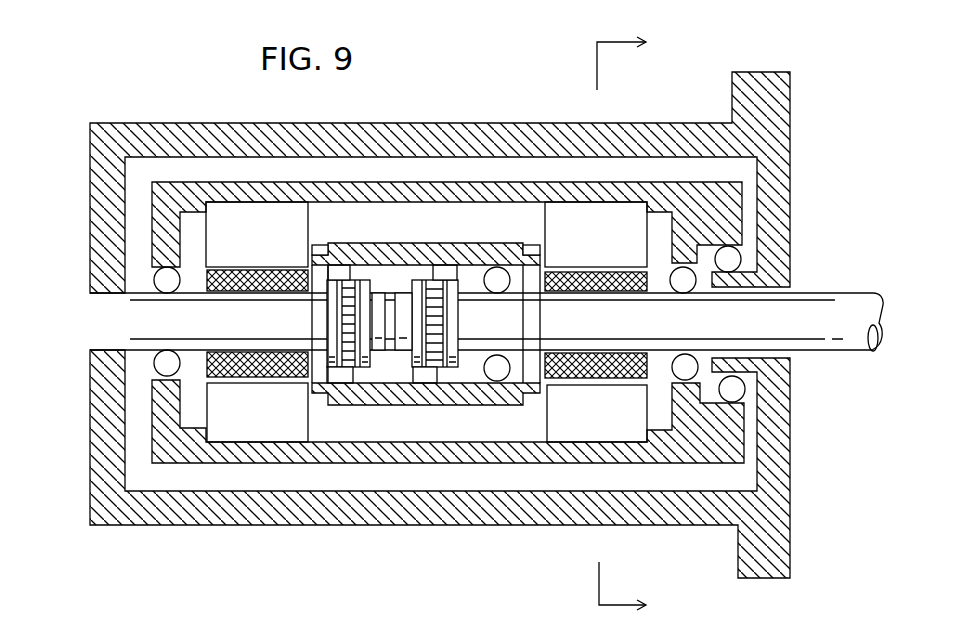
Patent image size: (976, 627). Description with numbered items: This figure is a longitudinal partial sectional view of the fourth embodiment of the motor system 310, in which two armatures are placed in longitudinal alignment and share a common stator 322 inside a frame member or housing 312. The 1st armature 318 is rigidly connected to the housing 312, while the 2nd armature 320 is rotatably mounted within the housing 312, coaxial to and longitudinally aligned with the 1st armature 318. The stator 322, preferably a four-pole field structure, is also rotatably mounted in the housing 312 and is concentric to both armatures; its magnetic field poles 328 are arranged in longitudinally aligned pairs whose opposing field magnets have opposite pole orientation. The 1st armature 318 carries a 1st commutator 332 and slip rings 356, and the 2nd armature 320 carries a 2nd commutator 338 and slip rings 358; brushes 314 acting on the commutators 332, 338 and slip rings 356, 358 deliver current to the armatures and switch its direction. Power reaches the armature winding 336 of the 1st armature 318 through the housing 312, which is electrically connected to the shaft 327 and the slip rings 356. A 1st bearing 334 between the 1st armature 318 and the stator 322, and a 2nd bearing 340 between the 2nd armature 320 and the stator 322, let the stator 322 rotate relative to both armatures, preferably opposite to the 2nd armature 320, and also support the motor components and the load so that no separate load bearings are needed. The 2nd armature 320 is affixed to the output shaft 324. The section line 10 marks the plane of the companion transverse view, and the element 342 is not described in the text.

The fourth embodiment motor system 310 is at (706, 72).
The housing 312 is at (75, 152).
The brushes 314 is at (342, 265).
The 1st armature 318 is at (272, 345).
The 2nd armature 320 is at (691, 294).
The stator 322 is at (556, 216).
The output shaft 324 is at (841, 338).
The shaft 327 is at (143, 357).
The magnetic field poles 328 is at (624, 263).
The 1st commutator 332 is at (339, 311).
The 1st bearing 334 is at (149, 283).
The armature winding 336 is at (274, 382).
The 2nd commutator 338 is at (438, 309).
The 2nd bearing 340 is at (691, 296).
The magnet 342 is at (575, 383).
The slip rings 356 is at (327, 383).
The slip rings 358 is at (452, 383).
The section line 10- 10 is at (649, 328).